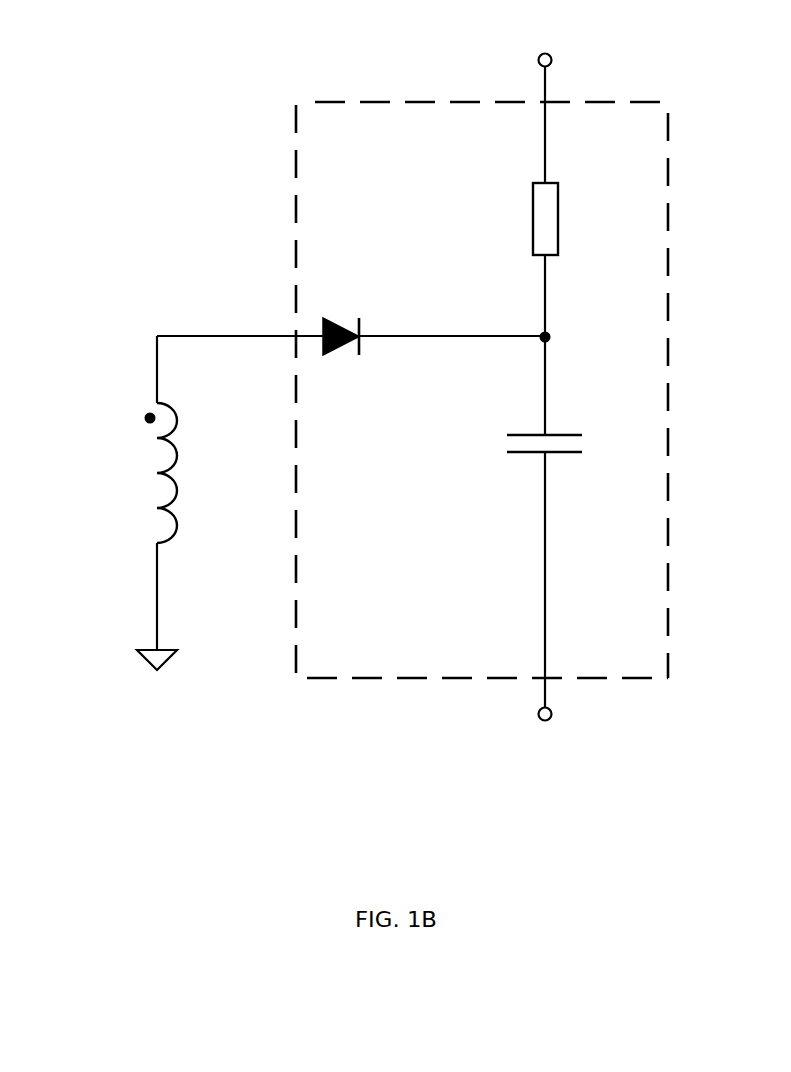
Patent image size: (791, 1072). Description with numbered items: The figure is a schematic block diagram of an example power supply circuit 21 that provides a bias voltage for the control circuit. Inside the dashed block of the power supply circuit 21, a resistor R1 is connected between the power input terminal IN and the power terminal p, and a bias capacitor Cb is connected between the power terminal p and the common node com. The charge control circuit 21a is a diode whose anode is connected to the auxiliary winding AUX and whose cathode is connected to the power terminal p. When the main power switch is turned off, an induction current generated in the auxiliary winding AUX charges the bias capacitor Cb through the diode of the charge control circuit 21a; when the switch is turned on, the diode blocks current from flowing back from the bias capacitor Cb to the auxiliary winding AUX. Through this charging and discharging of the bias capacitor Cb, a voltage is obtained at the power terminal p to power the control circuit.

The power supply circuit 21 is at (327, 101).
The charge control circuit 21a is at (330, 317).
The resistor R1 is at (589, 219).
The bias capacitor Cb is at (577, 441).
The power terminal p is at (564, 339).
The power input terminal IN is at (545, 94).
The common node com is at (543, 739).
The auxiliary winding AUX is at (108, 470).